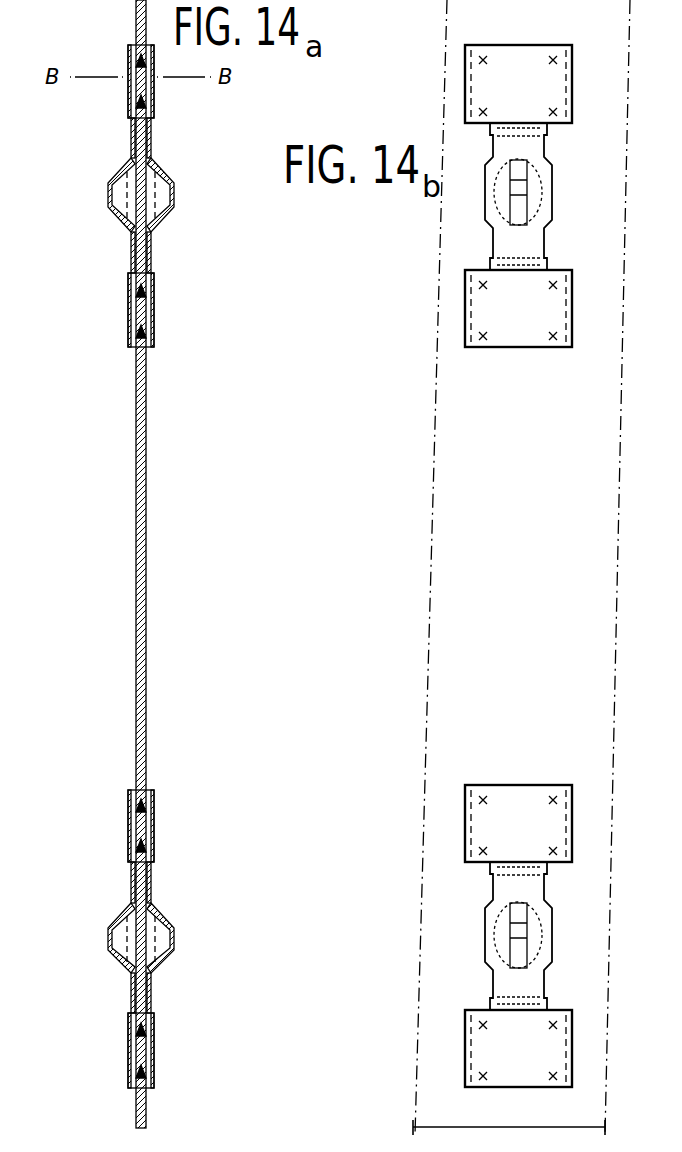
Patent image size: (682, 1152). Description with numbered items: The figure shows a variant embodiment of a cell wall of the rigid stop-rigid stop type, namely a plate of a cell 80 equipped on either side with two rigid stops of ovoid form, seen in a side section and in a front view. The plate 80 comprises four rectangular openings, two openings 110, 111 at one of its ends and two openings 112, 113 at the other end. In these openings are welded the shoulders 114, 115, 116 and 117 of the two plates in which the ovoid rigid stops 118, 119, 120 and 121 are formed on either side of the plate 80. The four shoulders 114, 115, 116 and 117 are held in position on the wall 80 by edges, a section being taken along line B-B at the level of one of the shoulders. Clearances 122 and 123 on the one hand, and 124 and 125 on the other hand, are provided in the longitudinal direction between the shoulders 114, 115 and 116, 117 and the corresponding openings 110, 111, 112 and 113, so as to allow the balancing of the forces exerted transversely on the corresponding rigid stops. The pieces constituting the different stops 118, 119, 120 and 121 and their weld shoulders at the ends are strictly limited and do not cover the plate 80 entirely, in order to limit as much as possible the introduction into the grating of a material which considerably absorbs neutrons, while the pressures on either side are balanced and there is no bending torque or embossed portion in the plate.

In FIG. 14a, the plate of a cell 80 is at (138, 556).
In FIG. 14b, the plate of a cell 80 is at (455, 532).
In FIG. 14a, the rectangular opening 110 is at (129, 1027).
In FIG. 14b, the rectangular opening 110 is at (465, 1068).
In FIG. 14a, the rectangular opening 111 is at (129, 800).
In FIG. 14b, the rectangular opening 111 is at (465, 800).
In FIG. 14a, the rectangular opening 112 is at (128, 305).
In FIG. 14b, the rectangular opening 112 is at (573, 328).
In FIG. 14a, the rectangular opening 113 is at (129, 60).
In FIG. 14b, the rectangular opening 113 is at (573, 74).
In FIG. 14a, the shoulder 114 is at (146, 1031).
In FIG. 14a, the shoulder 115 is at (152, 803).
In FIG. 14a, the shoulder 116 is at (151, 296).
In FIG. 14a, the shoulder 117 is at (140, 92).
In FIG. 14a, the ovoid rigid stop 118 is at (115, 915).
In FIG. 14a, the ovoid rigid stop 119 is at (169, 916).
In FIG. 14a, the ovoid rigid stop 120 is at (117, 175).
In FIG. 14a, the ovoid rigid stop 121 is at (166, 175).
In FIG. 14b, the clearance 122 is at (490, 1003).
In FIG. 14b, the clearance 123 is at (490, 868).
In FIG. 14b, the clearance 124 is at (553, 268).
In FIG. 14b, the clearance 125 is at (553, 126).